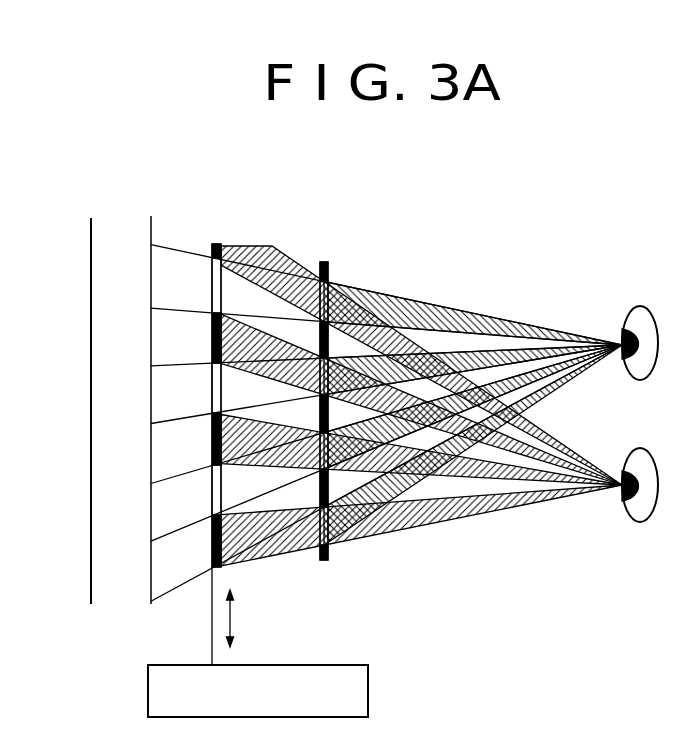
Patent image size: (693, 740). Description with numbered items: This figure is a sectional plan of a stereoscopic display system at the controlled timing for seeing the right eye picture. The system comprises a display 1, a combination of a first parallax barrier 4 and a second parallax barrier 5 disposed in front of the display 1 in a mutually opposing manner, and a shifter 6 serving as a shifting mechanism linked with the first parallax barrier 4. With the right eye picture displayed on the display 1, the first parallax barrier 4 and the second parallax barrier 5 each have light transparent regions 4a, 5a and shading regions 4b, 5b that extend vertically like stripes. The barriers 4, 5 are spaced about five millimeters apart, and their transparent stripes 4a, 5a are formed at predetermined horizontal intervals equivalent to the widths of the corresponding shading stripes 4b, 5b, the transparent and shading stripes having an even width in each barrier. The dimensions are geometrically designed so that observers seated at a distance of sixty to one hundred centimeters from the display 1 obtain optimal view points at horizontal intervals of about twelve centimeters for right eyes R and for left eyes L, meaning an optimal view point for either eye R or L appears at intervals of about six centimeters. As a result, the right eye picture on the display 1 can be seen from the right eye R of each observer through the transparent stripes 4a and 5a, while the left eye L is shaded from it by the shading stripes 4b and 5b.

The display 1 is at (153, 230).
The first parallax barrier 4 is at (219, 243).
The light transparent regions 4a is at (213, 290).
The shading regions 4b is at (213, 335).
The second parallax barrier 5 is at (328, 268).
The light transparent regions 5a is at (310, 270).
The shading regions 5b is at (313, 333).
The shifter 6 is at (368, 700).
The right eye R is at (640, 305).
The left eye L is at (640, 522).